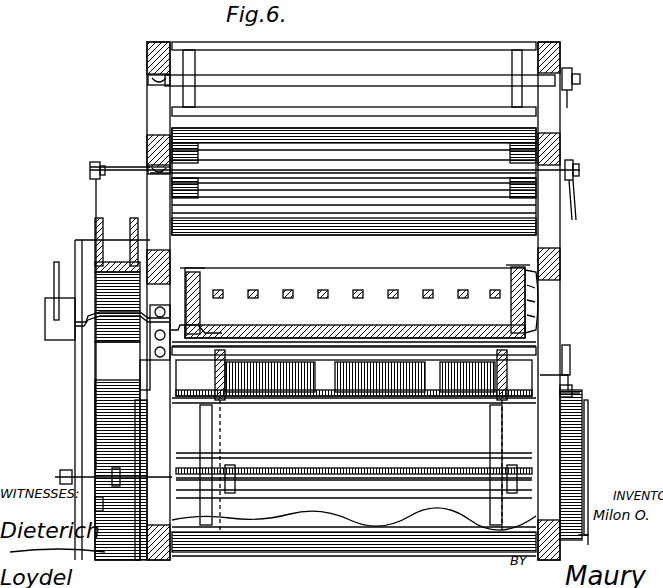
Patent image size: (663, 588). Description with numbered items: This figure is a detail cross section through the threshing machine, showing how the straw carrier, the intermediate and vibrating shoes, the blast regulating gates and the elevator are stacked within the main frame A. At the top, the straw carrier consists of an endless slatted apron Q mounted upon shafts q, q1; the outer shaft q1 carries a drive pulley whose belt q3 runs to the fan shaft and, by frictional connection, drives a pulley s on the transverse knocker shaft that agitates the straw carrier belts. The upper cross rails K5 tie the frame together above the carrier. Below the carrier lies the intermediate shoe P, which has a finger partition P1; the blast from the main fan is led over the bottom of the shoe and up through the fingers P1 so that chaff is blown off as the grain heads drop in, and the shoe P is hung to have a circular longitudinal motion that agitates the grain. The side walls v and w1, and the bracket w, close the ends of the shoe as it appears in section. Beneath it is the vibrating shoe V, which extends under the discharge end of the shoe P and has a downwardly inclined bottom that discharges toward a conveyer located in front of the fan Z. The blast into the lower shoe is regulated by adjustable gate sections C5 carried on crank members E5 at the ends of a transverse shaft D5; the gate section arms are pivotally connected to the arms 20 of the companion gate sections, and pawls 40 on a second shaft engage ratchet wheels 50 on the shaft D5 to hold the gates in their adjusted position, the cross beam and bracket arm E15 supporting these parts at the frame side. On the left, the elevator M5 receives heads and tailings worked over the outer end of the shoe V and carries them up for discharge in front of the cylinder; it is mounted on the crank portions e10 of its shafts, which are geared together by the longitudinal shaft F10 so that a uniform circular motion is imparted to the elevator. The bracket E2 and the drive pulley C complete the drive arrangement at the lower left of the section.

The frame A is at (345, 88).
The upper cross rails K5 is at (340, 76).
The straw carrier shaft q is at (522, 163).
The outer straw carrier shaft q1 is at (126, 169).
The belt q3 is at (576, 184).
The pulley s is at (575, 156).
The endless slatted apron Q is at (360, 212).
The intermediate shoe P is at (340, 330).
The finger partition P1 is at (318, 288).
The inclined chute or board v is at (204, 298).
The pan side bracket w is at (540, 282).
The pan side wall w1 is at (508, 308).
The ratchet wheel 50 is at (230, 352).
The shaft D5 is at (296, 364).
The crank member E5 is at (362, 380).
The vibrating shoe V is at (285, 480).
The fan Z is at (338, 500).
The pawl 40 is at (238, 400).
The longitudinal shaft F10 is at (52, 264).
The crank portion e10 is at (86, 318).
The elevator M5 is at (108, 362).
The bracket E2 is at (130, 375).
The drive pulley C is at (140, 486).
The bracket arm E15 is at (572, 368).
The arm 20 is at (580, 392).
The adjustable gate section C5 is at (582, 458).